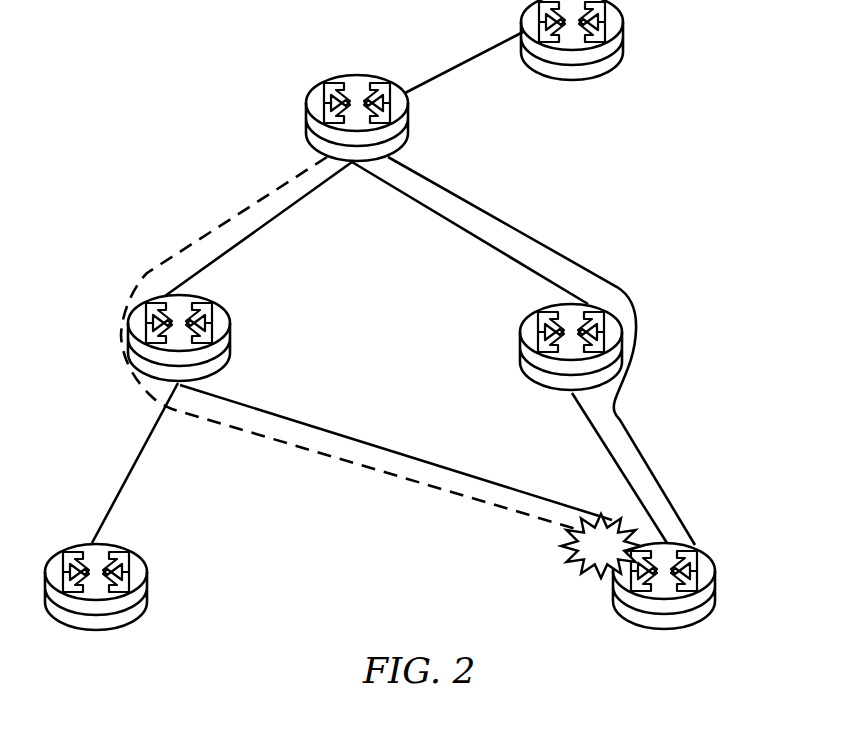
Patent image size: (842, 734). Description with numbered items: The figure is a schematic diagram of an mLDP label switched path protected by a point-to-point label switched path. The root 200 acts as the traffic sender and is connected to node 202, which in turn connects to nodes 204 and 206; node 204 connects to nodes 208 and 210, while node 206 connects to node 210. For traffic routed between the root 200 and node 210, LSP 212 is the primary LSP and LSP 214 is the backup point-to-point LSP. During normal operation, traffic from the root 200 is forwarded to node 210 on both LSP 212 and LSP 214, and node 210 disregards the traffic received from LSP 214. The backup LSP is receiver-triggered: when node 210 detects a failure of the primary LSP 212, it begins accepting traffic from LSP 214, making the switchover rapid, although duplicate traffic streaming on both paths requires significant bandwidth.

The root 200 is at (623, 36).
The node 202 is at (408, 117).
The node 204 is at (230, 336).
The node 206 is at (520, 340).
The node 208 is at (147, 585).
The node 210 is at (715, 584).
The primary LSP 212 is at (388, 475).
The backup P2P LSP 214 is at (620, 412).